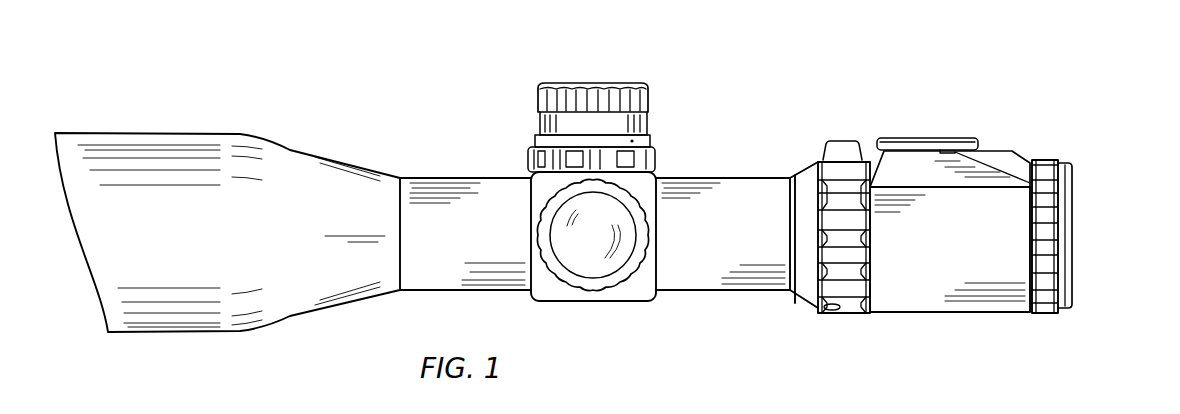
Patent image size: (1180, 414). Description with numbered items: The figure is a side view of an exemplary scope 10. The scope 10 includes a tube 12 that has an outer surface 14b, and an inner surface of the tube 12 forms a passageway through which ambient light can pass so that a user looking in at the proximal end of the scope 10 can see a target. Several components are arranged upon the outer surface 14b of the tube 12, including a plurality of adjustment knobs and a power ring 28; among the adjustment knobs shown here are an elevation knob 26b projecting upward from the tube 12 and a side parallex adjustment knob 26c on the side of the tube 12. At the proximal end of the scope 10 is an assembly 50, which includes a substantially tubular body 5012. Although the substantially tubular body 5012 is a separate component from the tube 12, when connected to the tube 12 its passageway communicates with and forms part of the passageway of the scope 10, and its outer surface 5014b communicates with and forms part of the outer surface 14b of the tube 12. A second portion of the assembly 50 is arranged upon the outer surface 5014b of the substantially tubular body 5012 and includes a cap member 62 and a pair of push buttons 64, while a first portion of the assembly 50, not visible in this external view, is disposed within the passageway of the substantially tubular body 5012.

The scope 10 is at (39, 101).
The tube 12 is at (175, 96).
The outer surface 14b is at (279, 140).
The elevation knob 26b is at (567, 76).
The side parallex adjustment knob 26c is at (634, 193).
The power ring 28 is at (836, 137).
The assembly 50 is at (983, 94).
The cap member 62 is at (905, 126).
The pair of push buttons 64 is at (1012, 139).
The outer surface 5014b is at (898, 313).
The substantially tubular body 5012 is at (958, 318).